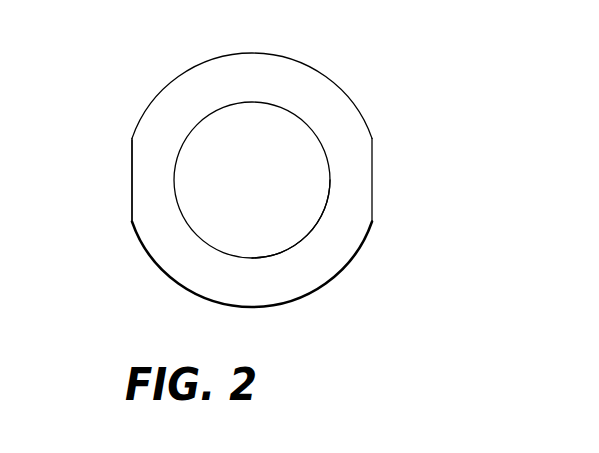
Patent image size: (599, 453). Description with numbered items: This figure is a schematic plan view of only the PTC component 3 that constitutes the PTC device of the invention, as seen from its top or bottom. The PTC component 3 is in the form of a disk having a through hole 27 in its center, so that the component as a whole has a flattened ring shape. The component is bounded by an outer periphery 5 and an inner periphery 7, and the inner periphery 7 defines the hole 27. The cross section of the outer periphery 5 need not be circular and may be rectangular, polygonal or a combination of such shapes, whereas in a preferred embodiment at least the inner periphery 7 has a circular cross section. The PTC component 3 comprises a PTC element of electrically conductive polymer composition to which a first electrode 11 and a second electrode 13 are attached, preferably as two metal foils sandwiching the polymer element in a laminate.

The PTC component 3 is at (400, 181).
The outer periphery 5 is at (132, 175).
The inner periphery 7 is at (192, 230).
The first electrode 11 is at (271, 156).
The second electrode 13 is at (275, 73).
The through hole 27 is at (292, 213).